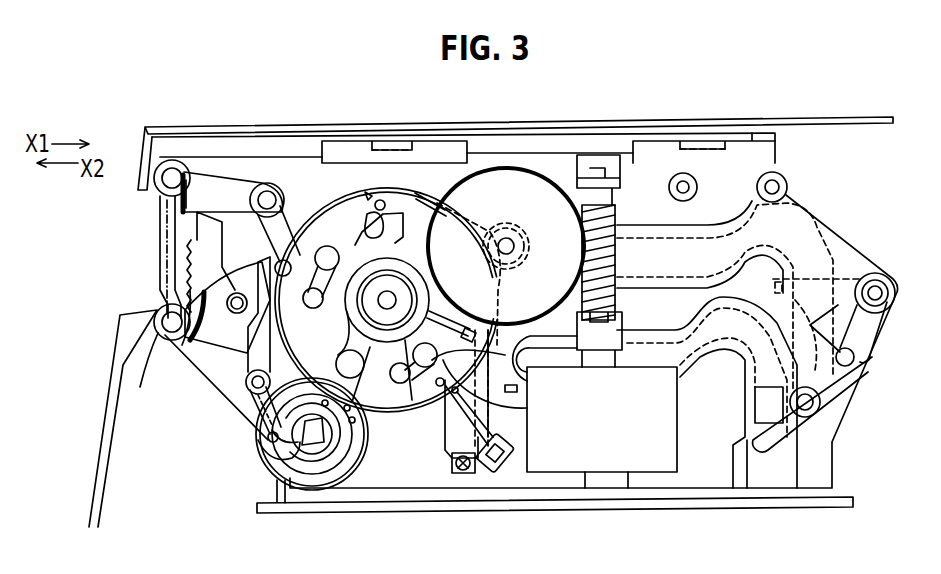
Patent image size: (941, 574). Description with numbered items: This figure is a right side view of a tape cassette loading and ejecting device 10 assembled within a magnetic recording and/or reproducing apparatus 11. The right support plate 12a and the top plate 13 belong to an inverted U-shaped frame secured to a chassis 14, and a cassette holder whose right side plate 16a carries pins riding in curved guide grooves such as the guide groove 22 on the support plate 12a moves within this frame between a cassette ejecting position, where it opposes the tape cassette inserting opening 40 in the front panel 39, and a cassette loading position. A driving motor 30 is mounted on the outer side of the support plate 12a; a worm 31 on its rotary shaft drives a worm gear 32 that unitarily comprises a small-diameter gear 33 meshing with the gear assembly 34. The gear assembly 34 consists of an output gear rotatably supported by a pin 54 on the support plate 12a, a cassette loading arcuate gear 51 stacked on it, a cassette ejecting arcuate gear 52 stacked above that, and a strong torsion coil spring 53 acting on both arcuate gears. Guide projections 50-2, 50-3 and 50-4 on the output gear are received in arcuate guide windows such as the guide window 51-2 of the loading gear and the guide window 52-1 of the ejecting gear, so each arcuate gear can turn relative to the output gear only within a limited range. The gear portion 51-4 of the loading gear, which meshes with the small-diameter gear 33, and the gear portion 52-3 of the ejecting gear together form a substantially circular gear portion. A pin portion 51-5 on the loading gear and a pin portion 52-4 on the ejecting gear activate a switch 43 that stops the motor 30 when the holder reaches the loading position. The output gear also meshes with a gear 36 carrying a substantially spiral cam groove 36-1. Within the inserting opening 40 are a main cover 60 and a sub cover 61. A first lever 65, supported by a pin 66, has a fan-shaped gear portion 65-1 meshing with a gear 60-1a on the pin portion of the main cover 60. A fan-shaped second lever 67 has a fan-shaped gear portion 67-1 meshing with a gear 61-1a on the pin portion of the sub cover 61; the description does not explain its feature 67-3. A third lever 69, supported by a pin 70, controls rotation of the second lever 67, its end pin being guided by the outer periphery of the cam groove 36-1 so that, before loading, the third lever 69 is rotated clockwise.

The tape cassette loading and ejecting device 10 is at (819, 90).
The magnetic recording and/or reproducing apparatus 11 is at (688, 118).
The right support plate 12a is at (808, 213).
The top plate 13 is at (534, 138).
The chassis 14 is at (683, 505).
The right side plate 16a is at (200, 251).
The curved guide groove 22 is at (700, 346).
The driving motor 30 is at (678, 455).
The worm 31 is at (614, 212).
The worm gear 32 is at (541, 190).
The small-diameter gear 33 is at (529, 242).
The gear assembly 34 is at (370, 200).
The gear 36 is at (352, 458).
The spiral cam groove 36-1 is at (319, 452).
The front panel 39 is at (102, 442).
The tape cassette inserting opening 40 is at (143, 198).
The switch 43 is at (502, 477).
The guide projection 50-2 is at (366, 228).
The guide projection 50-3 is at (350, 306).
The guide projection 50-4 is at (405, 400).
The cassette loading arcuate gear 51 is at (340, 220).
The arcuate guide window 51-2 is at (352, 336).
The gear portion 51-4 is at (282, 252).
The pin portion 51-5 is at (383, 200).
The cassette ejecting arcuate gear 52 is at (389, 398).
The arcuate guide window 52-1 is at (508, 353).
The gear portion 52-3 is at (493, 325).
The pin portion 52-4 is at (527, 410).
The torsion coil spring 53 is at (387, 282).
The pin 54 is at (396, 299).
The main cover 60 is at (158, 228).
The gear 60-1a is at (170, 162).
The sub cover 61 is at (158, 289).
The gear 61-1a is at (151, 374).
The first lever 65 is at (248, 196).
The fan-shaped gear portion 65-1 is at (212, 195).
The pin 66 is at (272, 192).
The fan-shaped second lever 67 is at (242, 346).
The fan-shaped gear portion 67-1 is at (185, 338).
The hole 67-3 is at (230, 305).
The third lever 69 is at (257, 368).
The pin 70 is at (256, 386).